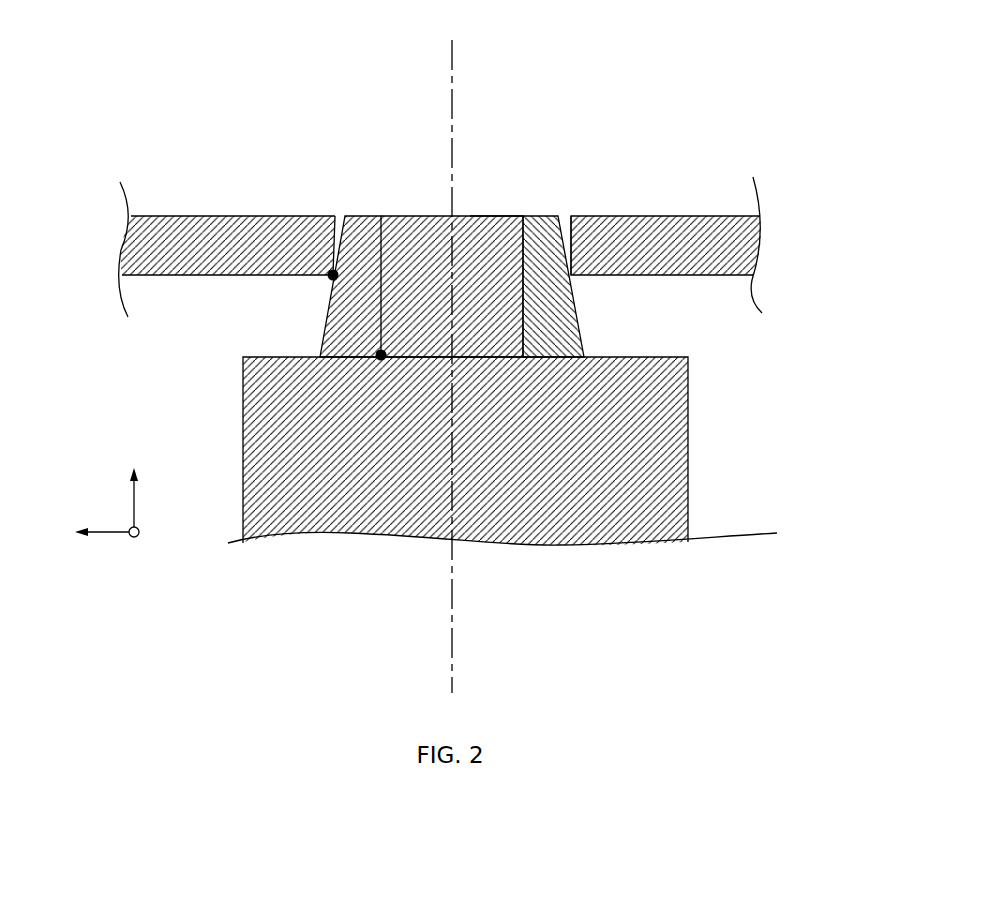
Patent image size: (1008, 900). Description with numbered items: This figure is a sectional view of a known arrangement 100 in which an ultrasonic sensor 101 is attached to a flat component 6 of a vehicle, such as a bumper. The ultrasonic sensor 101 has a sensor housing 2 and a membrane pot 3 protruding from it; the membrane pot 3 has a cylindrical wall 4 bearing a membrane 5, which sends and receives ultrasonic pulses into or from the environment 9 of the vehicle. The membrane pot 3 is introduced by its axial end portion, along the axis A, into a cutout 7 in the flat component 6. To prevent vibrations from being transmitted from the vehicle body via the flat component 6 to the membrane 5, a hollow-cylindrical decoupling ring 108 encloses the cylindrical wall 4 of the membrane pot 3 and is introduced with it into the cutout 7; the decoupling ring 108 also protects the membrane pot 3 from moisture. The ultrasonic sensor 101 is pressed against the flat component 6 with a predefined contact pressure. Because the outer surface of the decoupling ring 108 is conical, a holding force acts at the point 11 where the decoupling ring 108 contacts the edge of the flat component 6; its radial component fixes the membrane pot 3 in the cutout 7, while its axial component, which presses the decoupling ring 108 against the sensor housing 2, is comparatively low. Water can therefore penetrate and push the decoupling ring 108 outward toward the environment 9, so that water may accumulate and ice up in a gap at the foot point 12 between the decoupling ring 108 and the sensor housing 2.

The arrangement 100 is at (816, 92).
The ultrasonic sensor 101 is at (355, 72).
The decoupling ring 108 is at (355, 215).
The sensor housing 2 is at (421, 357).
The membrane pot 3 is at (493, 137).
The membrane 5 is at (488, 216).
The cylindrical wall 4 is at (540, 216).
The cutout 7 is at (583, 216).
The flat component 6 is at (610, 216).
The environment 9 is at (258, 82).
The point 11 is at (333, 275).
The foot point 12 is at (381, 355).
The axis A is at (452, 630).